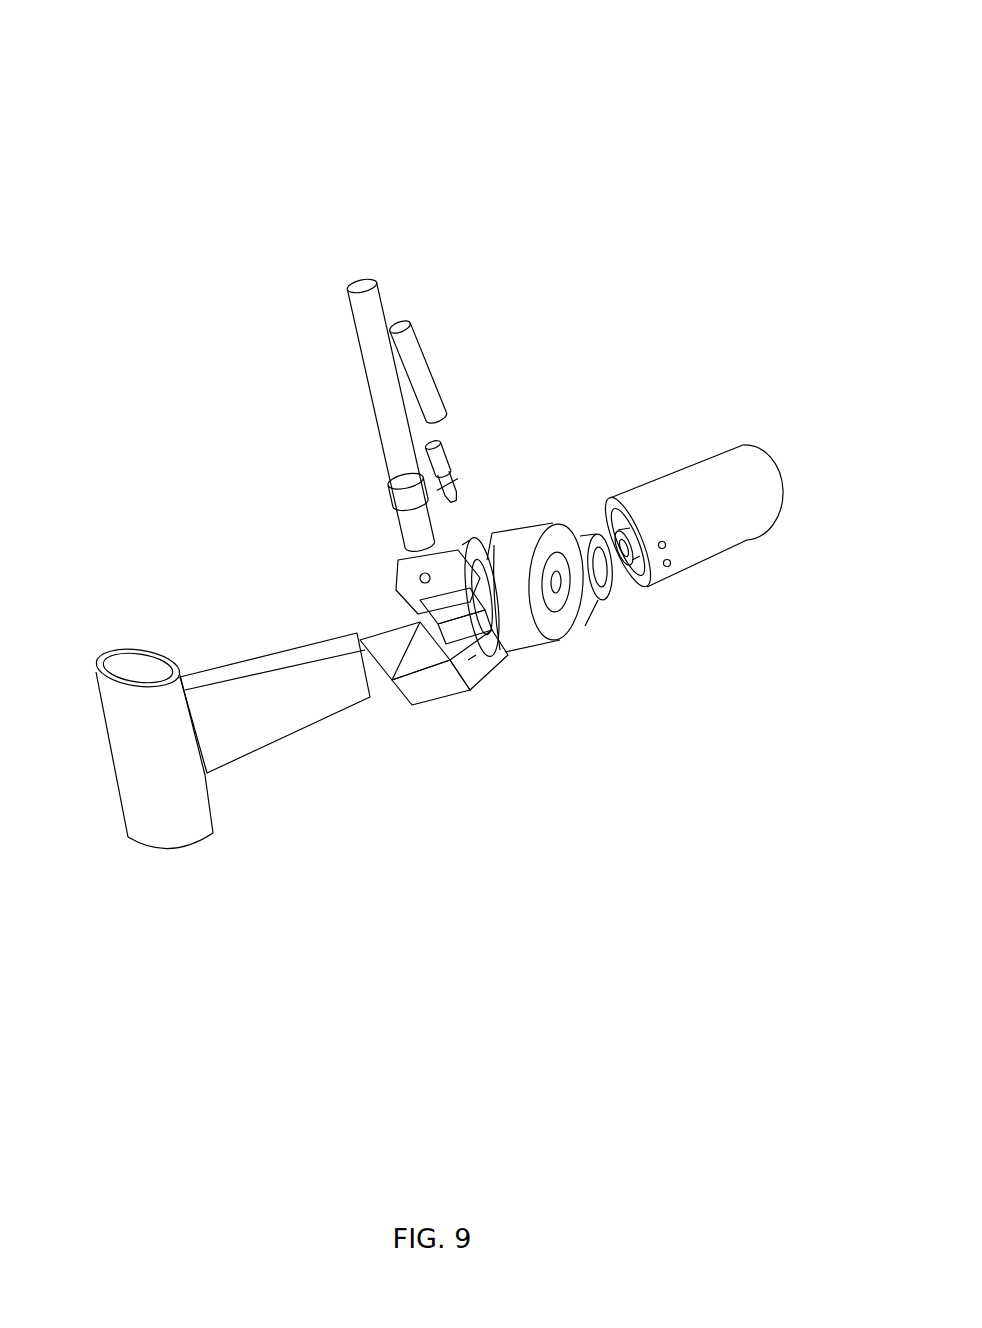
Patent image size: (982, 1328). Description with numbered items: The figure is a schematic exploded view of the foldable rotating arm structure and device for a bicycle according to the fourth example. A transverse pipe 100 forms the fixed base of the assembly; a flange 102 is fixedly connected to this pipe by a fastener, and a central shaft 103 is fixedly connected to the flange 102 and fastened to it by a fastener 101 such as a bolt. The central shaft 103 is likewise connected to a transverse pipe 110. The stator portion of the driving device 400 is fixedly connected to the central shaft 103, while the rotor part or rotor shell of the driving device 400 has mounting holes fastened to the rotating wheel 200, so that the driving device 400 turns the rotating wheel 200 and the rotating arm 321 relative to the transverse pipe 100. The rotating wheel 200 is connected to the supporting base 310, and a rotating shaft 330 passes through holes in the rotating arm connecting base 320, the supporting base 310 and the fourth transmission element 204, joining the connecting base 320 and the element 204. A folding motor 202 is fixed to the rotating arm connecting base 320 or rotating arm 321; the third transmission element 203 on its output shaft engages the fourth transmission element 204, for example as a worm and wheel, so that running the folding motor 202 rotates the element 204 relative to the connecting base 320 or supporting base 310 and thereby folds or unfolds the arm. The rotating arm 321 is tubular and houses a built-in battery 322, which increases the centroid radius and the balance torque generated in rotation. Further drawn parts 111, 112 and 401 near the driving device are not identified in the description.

The transverse pipe 100 is at (227, 850).
The fastener 101 is at (337, 803).
The flange 102 is at (396, 814).
The central shaft 103 is at (484, 847).
The transverse pipe 110 is at (715, 763).
The motor shaft 111 is at (682, 707).
The washer 112 is at (666, 774).
The rotating wheel 200 is at (610, 360).
The folding motor 202 is at (460, 242).
The third transmission element 203 is at (490, 284).
The fourth transmission element 204 is at (286, 545).
The supporting base 310 is at (353, 591).
The rotating arm connecting base 320 is at (253, 446).
The rotating arm 321 is at (255, 349).
The built-in battery 322 is at (374, 245).
The rotating shaft 330 is at (246, 726).
The driving device 400 is at (608, 809).
The flange 401 is at (545, 845).